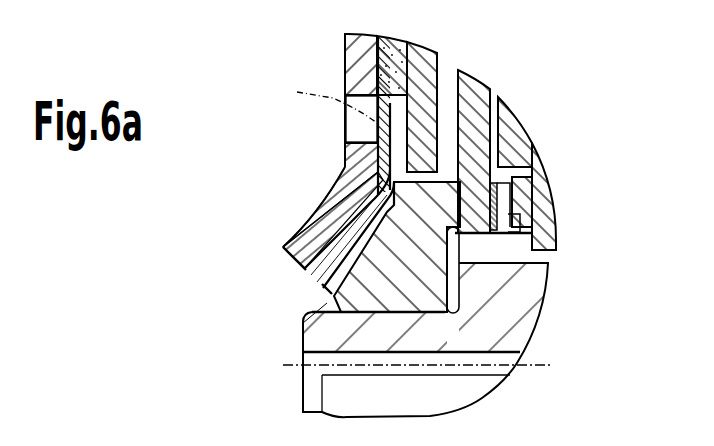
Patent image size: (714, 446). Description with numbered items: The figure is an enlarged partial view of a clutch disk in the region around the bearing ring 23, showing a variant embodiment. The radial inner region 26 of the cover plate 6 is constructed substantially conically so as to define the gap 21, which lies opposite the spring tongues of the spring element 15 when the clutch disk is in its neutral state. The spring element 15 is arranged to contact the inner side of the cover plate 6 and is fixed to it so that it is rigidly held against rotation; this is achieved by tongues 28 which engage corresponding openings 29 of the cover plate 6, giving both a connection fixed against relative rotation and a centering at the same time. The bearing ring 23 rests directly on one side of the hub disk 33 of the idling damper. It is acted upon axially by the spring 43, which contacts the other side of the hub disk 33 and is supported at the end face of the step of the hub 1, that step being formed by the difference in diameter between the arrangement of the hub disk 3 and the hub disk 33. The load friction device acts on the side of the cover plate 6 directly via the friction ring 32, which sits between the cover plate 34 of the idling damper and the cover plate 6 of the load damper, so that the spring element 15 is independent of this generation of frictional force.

The hub 1 is at (320, 348).
The hub disk 3 is at (550, 217).
The cover plate 6 is at (347, 73).
The spring element 15 is at (373, 230).
The gap 21 is at (314, 276).
The bearing ring 23 is at (315, 320).
The radial inner region 26 is at (290, 247).
The tongues 28 is at (322, 100).
The openings 29 is at (357, 135).
The friction ring 32 is at (372, 56).
The hub disk 33 is at (477, 207).
The cover plate 34 is at (413, 152).
The spring 43 is at (557, 240).